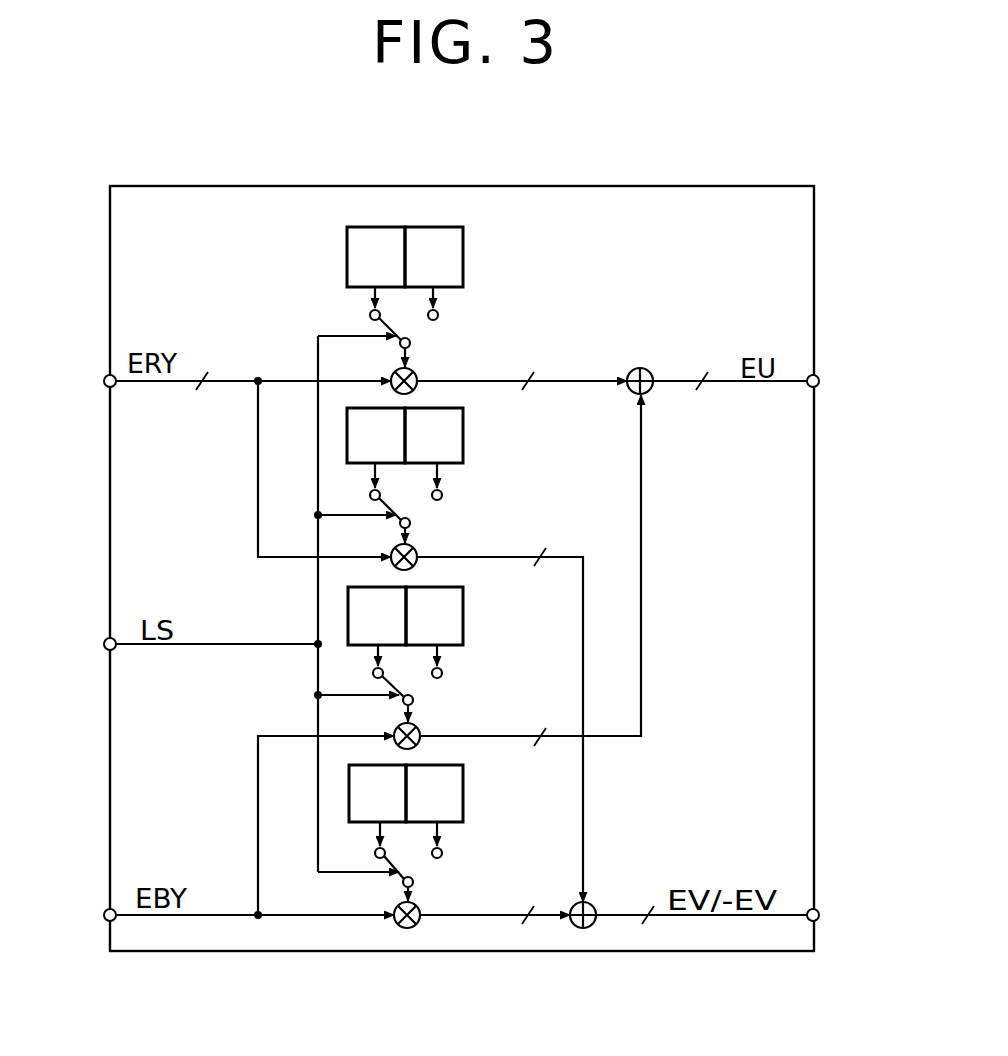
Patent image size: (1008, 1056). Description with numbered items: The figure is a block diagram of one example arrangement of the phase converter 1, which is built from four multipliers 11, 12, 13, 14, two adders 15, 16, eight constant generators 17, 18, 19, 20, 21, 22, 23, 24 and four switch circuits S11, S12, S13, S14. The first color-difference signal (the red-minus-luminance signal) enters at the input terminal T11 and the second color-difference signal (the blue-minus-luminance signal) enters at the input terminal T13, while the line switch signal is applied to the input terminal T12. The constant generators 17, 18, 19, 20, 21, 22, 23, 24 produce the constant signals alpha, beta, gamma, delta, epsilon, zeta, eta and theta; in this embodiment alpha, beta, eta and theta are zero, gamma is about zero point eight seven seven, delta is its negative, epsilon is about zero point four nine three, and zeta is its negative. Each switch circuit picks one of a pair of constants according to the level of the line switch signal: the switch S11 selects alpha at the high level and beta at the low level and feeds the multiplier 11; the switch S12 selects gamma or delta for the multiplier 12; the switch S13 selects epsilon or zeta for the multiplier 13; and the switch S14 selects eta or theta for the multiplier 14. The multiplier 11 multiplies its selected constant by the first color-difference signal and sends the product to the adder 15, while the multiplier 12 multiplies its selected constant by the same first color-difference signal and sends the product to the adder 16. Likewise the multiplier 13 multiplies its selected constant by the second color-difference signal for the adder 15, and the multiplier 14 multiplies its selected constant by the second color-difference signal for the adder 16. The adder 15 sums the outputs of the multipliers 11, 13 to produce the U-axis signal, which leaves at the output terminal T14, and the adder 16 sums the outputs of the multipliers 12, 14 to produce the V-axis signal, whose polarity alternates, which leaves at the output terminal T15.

The phase converter 1 is at (815, 580).
The multiplier 11 is at (416, 375).
The multiplier 12 is at (417, 554).
The multiplier 13 is at (420, 733).
The multiplier 14 is at (420, 912).
The adder 15 is at (648, 372).
The adder 16 is at (592, 904).
The constant generator 17 is at (371, 233).
The constant generator 18 is at (428, 233).
The constant generator 19 is at (347, 438).
The constant generator 20 is at (463, 438).
The constant generator 21 is at (348, 617).
The constant generator 22 is at (463, 617).
The constant generator 23 is at (349, 795).
The constant generator 24 is at (463, 795).
The switch circuit S11 is at (419, 327).
The switch circuit S12 is at (430, 503).
The switch circuit S13 is at (424, 683).
The switch circuit S14 is at (428, 861).
The input terminal T11 is at (104, 381).
The input terminal T12 is at (104, 644).
The input terminal T13 is at (104, 915).
The output terminal T14 is at (820, 381).
The output terminal T15 is at (820, 915).